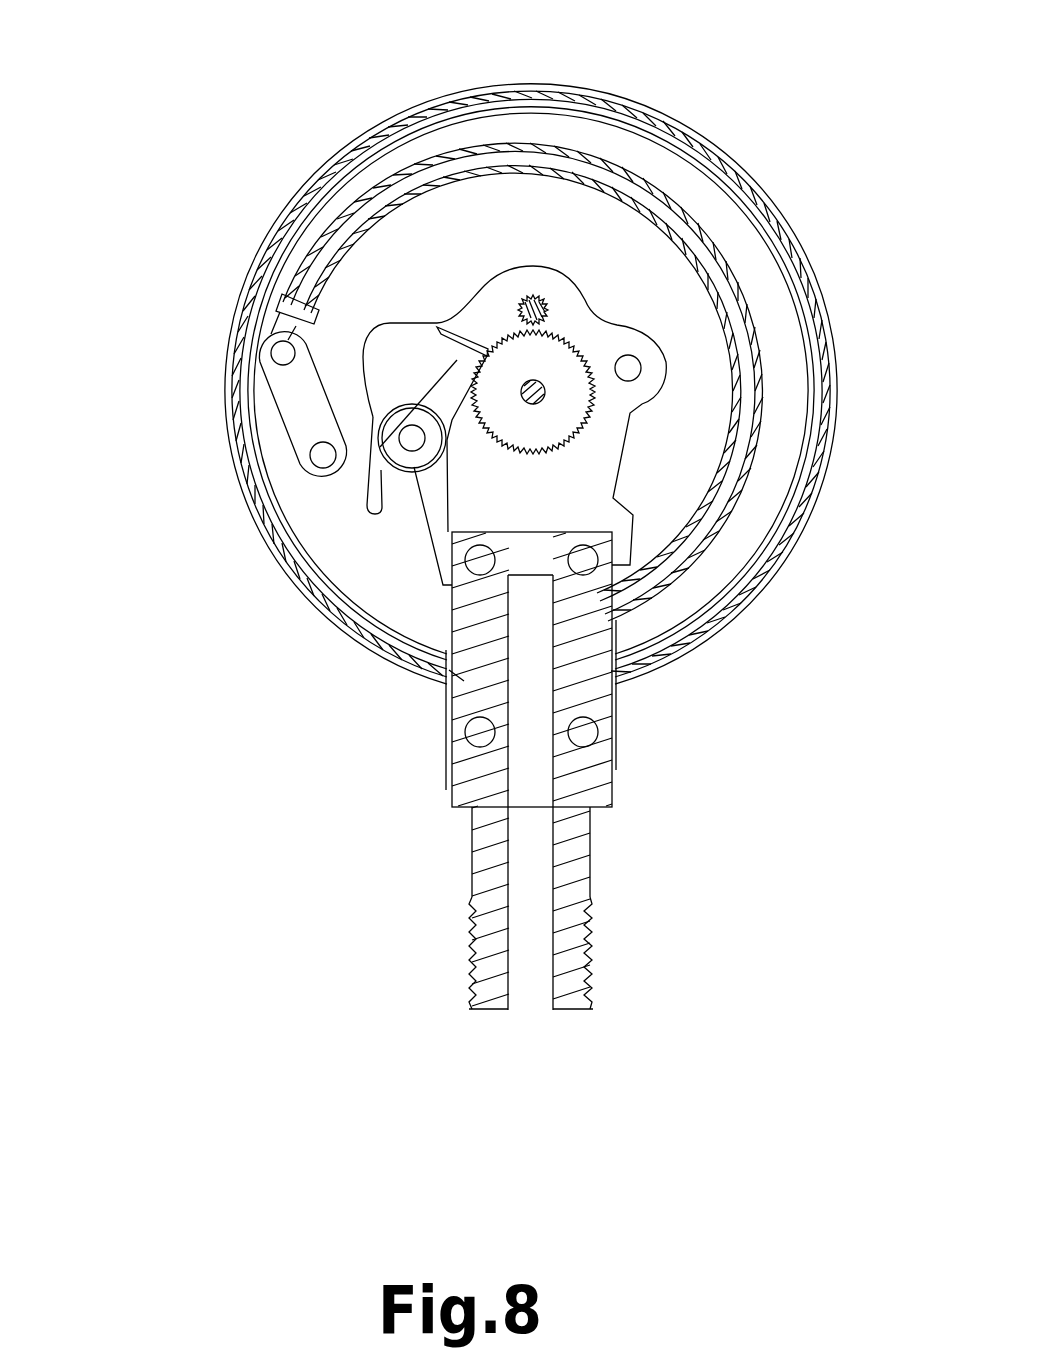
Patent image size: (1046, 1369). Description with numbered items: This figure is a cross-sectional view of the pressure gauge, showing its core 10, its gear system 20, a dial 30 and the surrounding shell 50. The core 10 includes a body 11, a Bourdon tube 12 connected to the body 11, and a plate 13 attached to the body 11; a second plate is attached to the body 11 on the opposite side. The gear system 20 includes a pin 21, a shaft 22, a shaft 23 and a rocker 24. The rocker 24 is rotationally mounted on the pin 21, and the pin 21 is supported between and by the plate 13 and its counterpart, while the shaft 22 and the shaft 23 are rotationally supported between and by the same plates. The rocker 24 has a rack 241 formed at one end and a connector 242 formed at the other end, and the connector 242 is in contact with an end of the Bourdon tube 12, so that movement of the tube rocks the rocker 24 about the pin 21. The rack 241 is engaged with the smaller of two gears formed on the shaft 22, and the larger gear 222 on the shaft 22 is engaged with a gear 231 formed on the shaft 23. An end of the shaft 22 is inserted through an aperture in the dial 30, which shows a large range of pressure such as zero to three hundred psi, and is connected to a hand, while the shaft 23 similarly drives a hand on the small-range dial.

The core 10 is at (400, 926).
The body 11 is at (452, 787).
The Bourdon tube 12 is at (733, 472).
The plate 13 is at (600, 430).
The gear system 20 is at (197, 750).
The pin 21 is at (415, 442).
The shaft 22 is at (547, 395).
The gear 222 is at (641, 368).
The shaft 23 is at (526, 297).
The gear 231 is at (541, 297).
The rocker 24 is at (300, 580).
The rack 241 is at (357, 518).
The connector 242 is at (300, 395).
The dial 30 is at (655, 300).
The shell 50 is at (795, 262).